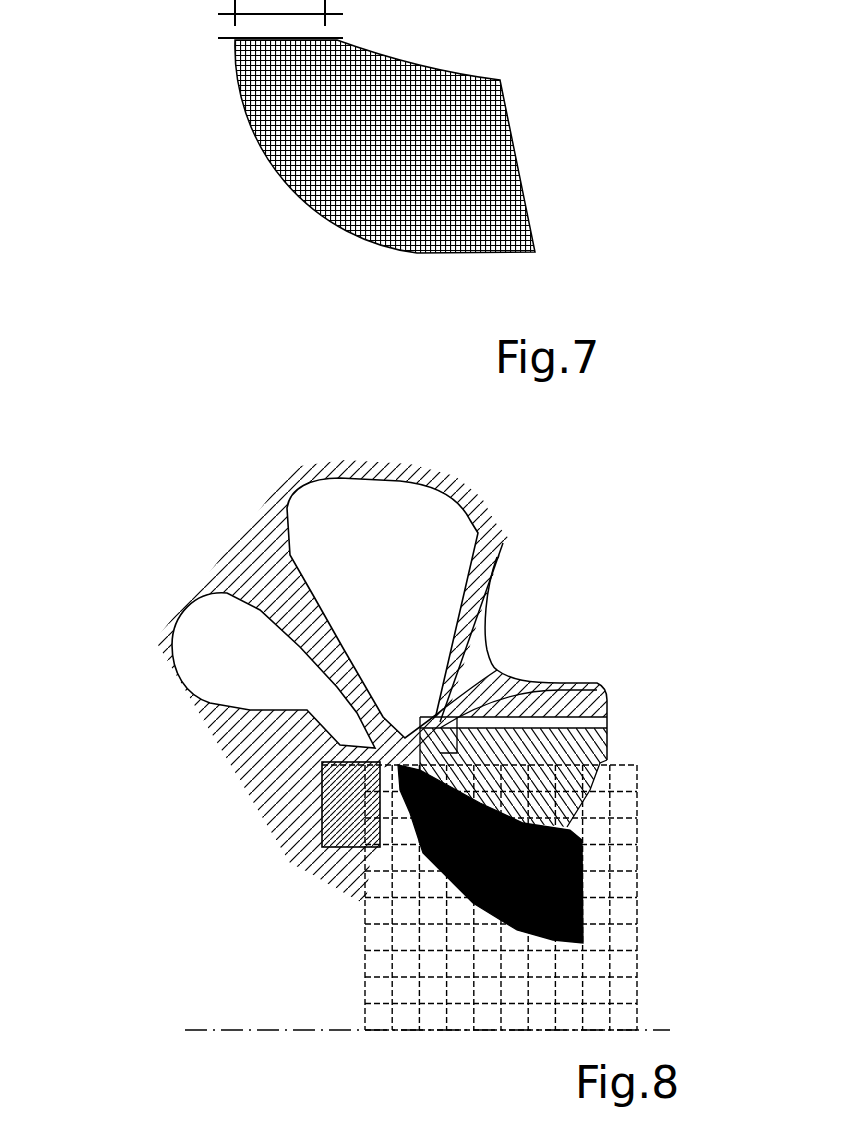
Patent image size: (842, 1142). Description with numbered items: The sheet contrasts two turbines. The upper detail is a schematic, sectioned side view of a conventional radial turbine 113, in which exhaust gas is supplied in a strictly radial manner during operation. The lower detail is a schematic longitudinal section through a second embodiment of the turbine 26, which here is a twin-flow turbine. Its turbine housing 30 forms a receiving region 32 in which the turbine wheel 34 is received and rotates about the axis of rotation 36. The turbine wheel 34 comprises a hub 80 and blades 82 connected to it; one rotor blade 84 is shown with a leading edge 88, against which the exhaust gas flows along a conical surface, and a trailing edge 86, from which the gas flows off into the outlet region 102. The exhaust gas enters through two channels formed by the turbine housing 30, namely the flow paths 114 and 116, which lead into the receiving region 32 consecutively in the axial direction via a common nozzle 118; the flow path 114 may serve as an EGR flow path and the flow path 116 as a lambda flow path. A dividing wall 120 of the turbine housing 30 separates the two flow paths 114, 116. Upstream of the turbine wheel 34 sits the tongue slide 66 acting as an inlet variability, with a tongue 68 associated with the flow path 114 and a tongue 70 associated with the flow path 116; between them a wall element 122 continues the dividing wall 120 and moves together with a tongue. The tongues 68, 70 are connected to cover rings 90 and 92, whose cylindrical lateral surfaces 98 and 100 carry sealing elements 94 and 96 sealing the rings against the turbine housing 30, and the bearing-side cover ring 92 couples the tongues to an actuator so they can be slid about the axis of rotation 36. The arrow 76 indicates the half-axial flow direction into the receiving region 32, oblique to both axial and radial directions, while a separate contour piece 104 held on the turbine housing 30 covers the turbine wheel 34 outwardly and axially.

In FIG. 7, the radial turbine 113 is at (466, 262).
In FIG. 8, the turbine 26 is at (140, 563).
In FIG. 8, the turbine housing 30 is at (507, 546).
In FIG. 8, the receiving region 32 is at (352, 925).
In FIG. 8, the turbine wheel 34 is at (575, 980).
In FIG. 8, the axis of rotation 36 is at (486, 1032).
In FIG. 8, the tongue slide 66 is at (443, 714).
In FIG. 8, the tongue 68 is at (320, 800).
In FIG. 8, the tongue 70 is at (597, 683).
In FIG. 8, the arrow 76 is at (411, 717).
In FIG. 8, the hub 80 is at (447, 1032).
In FIG. 8, the blades 82 is at (603, 859).
In FIG. 8, the rotor blade 84 is at (593, 817).
In FIG. 8, the trailing edge 86 is at (608, 887).
In FIG. 8, the leading edge 88 is at (513, 777).
In FIG. 8, the cover ring 90 is at (607, 717).
In FIG. 8, the cover ring 92 is at (322, 830).
In FIG. 8, the sealing element 94 is at (548, 680).
In FIG. 8, the sealing element 96 is at (322, 766).
In FIG. 8, the lateral surface 98 is at (422, 716).
In FIG. 8, the lateral surface 100 is at (352, 758).
In FIG. 8, the outlet region 102 is at (662, 960).
In FIG. 8, the contour piece 104 is at (577, 747).
In FIG. 8, the flow path 114 is at (244, 663).
In FIG. 8, the flow path 116 is at (398, 565).
In FIG. 8, the nozzle 118 is at (450, 712).
In FIG. 8, the dividing wall 120 is at (350, 652).
In FIG. 8, the wall element 122 is at (408, 880).